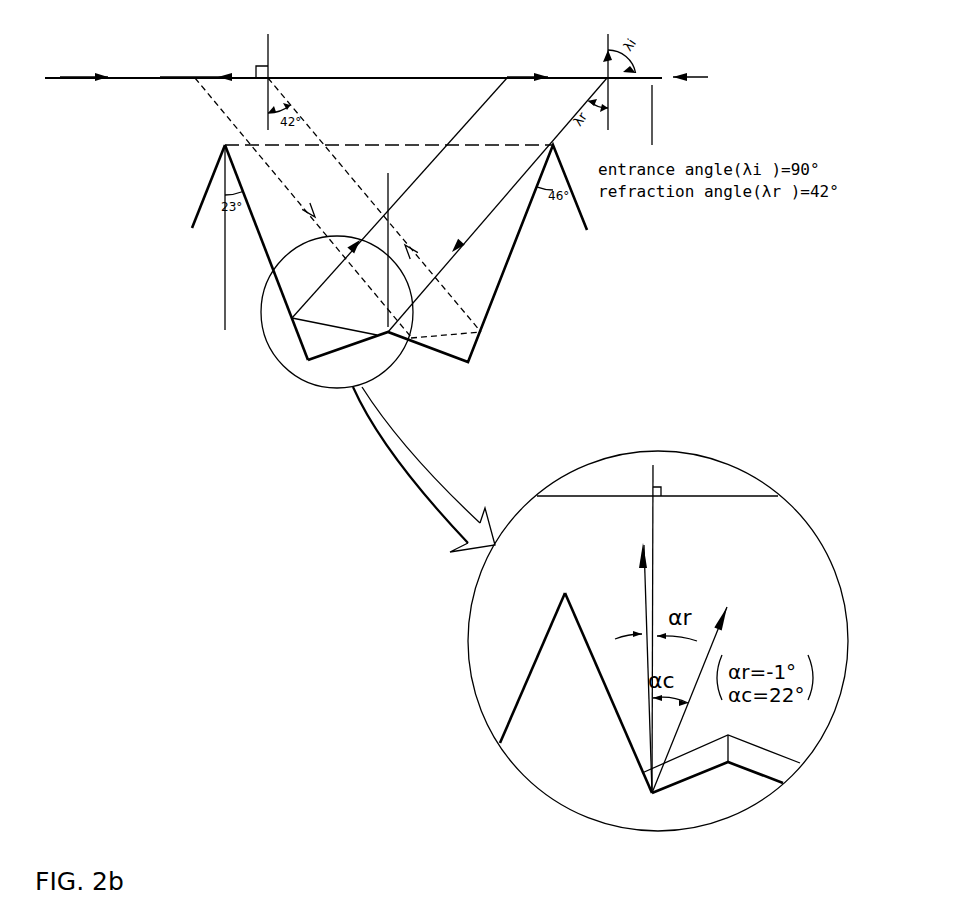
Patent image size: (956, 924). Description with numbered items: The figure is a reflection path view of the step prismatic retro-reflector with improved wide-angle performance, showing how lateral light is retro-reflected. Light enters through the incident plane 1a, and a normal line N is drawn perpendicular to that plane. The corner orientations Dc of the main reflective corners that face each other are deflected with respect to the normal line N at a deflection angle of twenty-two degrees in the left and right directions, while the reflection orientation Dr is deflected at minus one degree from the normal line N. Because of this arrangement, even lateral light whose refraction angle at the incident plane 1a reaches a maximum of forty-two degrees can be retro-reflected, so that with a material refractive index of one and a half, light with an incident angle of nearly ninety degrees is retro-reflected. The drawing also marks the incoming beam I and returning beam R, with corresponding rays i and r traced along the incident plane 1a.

The incident plane 1a is at (697, 496).
The normal line N is at (653, 478).
The reflection orientation Dr is at (637, 651).
The corner orientation Dc is at (700, 682).
The incident light I is at (698, 79).
The reflected light R is at (544, 62).
The incident ray i is at (74, 61).
The refracted ray r is at (196, 61).